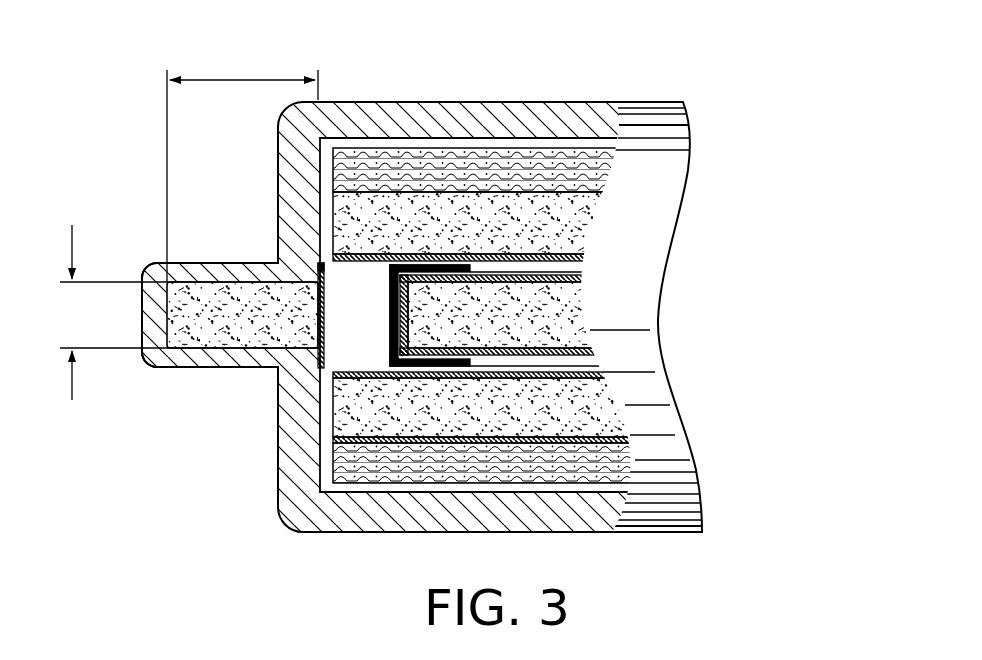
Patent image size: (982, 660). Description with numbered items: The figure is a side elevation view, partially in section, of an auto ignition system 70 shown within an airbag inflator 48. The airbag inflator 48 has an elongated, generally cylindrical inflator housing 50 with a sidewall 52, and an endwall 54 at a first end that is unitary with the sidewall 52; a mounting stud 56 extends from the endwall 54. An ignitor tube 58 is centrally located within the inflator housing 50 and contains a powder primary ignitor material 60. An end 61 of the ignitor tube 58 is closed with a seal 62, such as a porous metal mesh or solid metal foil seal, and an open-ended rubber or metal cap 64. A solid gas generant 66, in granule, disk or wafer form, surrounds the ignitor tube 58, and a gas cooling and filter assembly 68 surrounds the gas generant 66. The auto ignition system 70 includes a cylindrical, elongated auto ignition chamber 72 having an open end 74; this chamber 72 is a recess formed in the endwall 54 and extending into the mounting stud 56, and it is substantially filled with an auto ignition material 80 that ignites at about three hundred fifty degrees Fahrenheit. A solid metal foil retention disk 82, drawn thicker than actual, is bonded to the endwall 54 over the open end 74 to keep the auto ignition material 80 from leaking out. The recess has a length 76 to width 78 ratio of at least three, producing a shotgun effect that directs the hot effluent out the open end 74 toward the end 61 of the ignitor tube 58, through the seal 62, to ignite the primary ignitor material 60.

The airbag inflator 48 is at (548, 58).
The inflator housing 50 is at (618, 100).
The sidewall 52 is at (400, 102).
The endwall 54 is at (275, 462).
The mounting stud 56 is at (143, 360).
The ignitor tube 58 is at (582, 255).
The primary ignitor material 60 is at (576, 294).
The end of the ignitor tube 61 is at (396, 359).
The seal 62 is at (539, 304).
The cap 64 is at (594, 371).
The gas generant 66 is at (604, 403).
The gas cooling and filter assembly 68 is at (632, 474).
The auto ignition system 70 is at (192, 296).
The auto ignition chamber 72 is at (247, 348).
The open end 74 is at (325, 289).
The length 76 is at (240, 80).
The width 78 is at (72, 243).
The auto ignition material 80 is at (192, 335).
The solid metal foil retention disk 82 is at (325, 301).